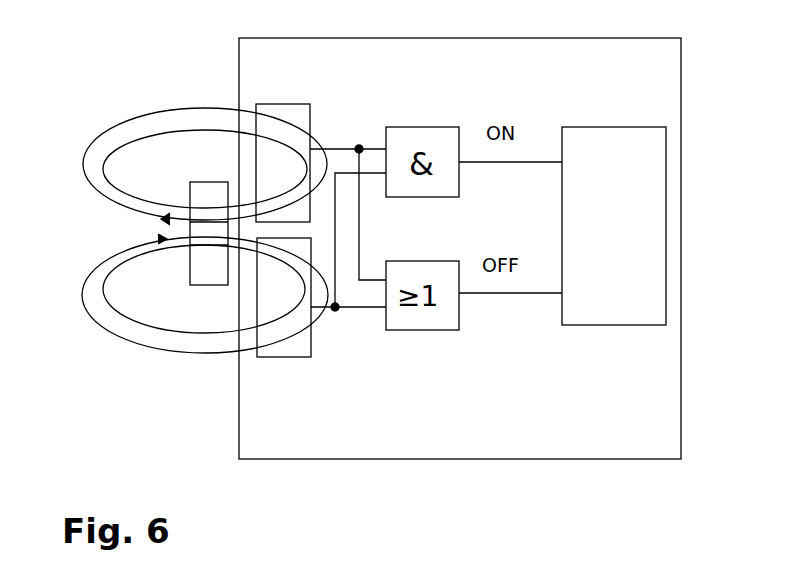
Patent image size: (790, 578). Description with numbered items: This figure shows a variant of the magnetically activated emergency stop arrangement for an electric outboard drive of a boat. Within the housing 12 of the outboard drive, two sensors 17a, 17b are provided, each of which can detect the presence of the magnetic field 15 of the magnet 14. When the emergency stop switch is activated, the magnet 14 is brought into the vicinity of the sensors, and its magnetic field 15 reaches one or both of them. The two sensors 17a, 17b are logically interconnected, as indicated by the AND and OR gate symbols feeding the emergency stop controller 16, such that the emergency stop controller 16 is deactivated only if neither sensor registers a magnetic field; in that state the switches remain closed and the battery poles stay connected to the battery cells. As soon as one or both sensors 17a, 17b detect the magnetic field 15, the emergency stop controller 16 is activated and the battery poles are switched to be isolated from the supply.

The housing 12 is at (460, 269).
The magnet 14 is at (209, 233).
The magnetic field 15 is at (205, 220).
The emergency stop controller 16 is at (614, 226).
The first sensor 17a is at (284, 316).
The second sensor 17b is at (283, 149).